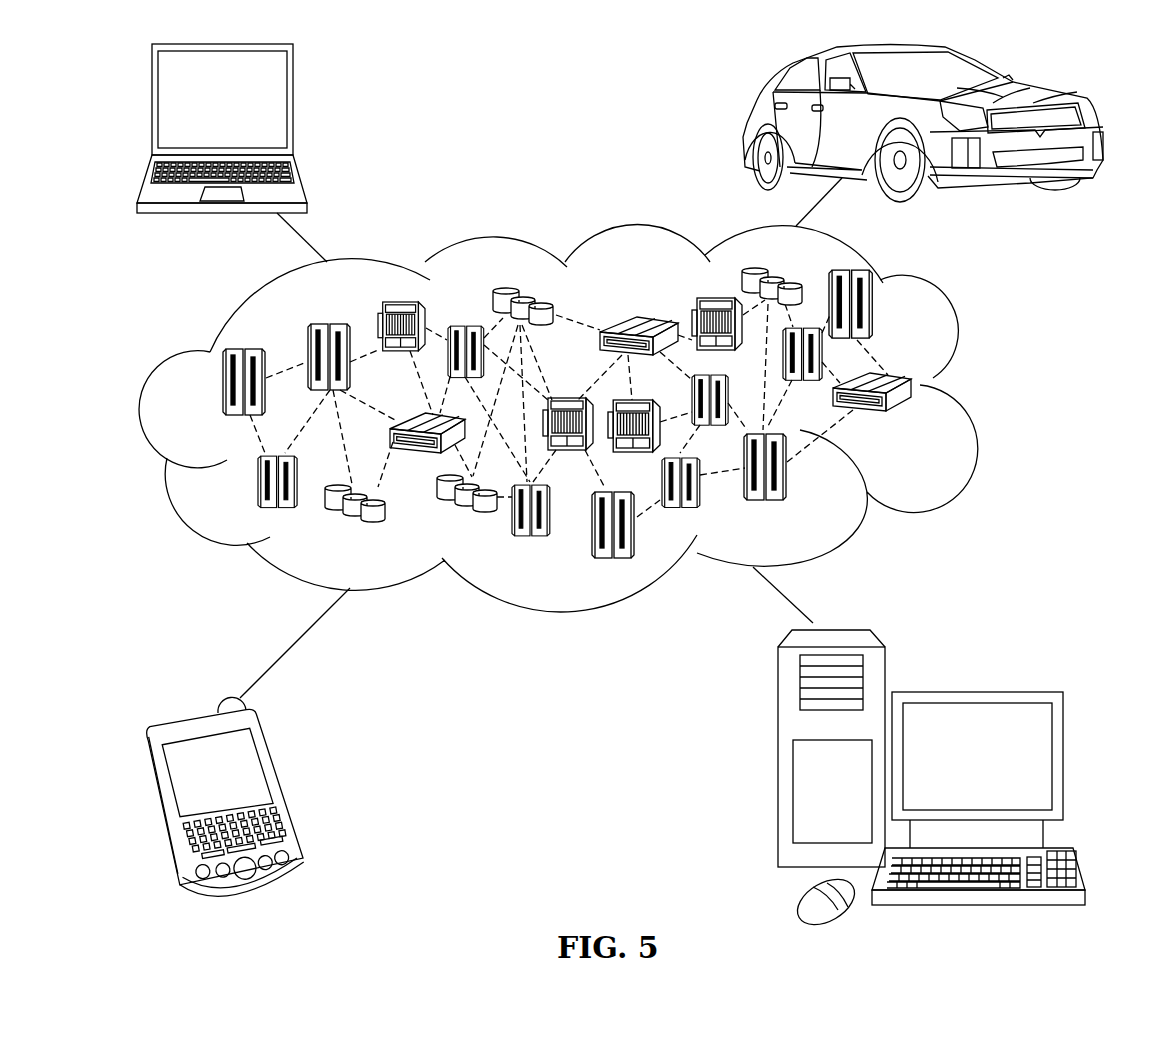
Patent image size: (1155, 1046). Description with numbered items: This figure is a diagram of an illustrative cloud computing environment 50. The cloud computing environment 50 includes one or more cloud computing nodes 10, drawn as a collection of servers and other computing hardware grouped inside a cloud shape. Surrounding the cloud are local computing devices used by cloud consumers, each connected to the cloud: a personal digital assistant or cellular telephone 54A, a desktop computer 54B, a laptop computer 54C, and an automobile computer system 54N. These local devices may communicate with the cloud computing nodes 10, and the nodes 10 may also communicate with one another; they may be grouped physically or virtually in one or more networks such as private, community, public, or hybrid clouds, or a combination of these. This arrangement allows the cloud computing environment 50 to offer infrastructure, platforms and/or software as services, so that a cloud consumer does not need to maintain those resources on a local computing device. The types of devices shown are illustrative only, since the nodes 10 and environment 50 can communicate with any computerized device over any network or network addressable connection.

The cloud computing environment 50 is at (977, 384).
The cloud computing node 10 is at (930, 428).
The personal digital assistant or cellular telephone 54A is at (282, 788).
The desktop computer 54B is at (973, 690).
The laptop computer 54C is at (293, 107).
The automobile computer system 54N is at (747, 123).